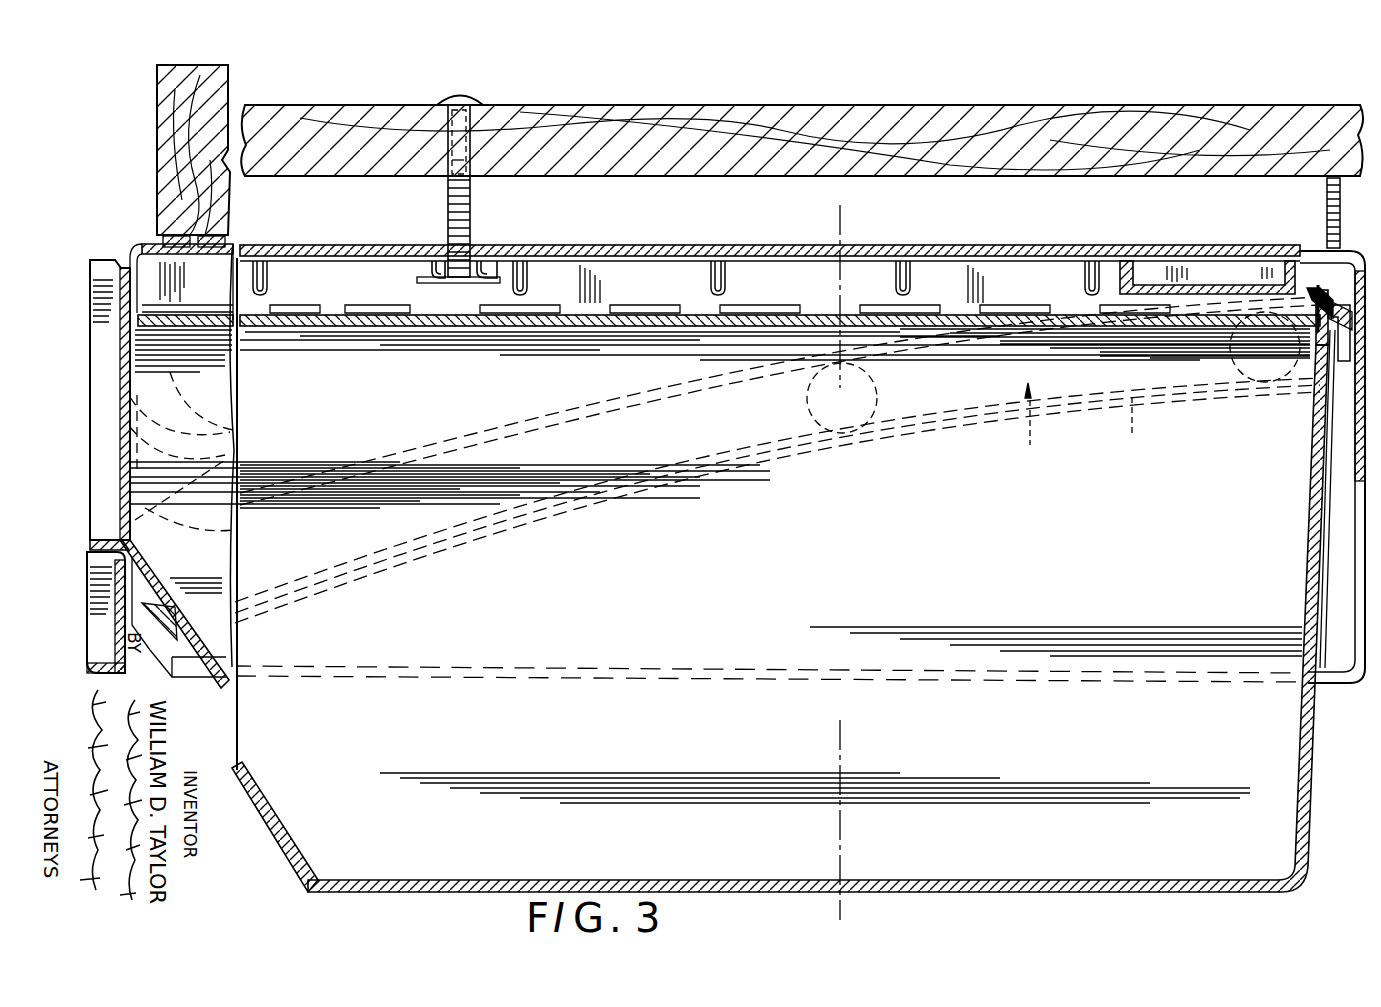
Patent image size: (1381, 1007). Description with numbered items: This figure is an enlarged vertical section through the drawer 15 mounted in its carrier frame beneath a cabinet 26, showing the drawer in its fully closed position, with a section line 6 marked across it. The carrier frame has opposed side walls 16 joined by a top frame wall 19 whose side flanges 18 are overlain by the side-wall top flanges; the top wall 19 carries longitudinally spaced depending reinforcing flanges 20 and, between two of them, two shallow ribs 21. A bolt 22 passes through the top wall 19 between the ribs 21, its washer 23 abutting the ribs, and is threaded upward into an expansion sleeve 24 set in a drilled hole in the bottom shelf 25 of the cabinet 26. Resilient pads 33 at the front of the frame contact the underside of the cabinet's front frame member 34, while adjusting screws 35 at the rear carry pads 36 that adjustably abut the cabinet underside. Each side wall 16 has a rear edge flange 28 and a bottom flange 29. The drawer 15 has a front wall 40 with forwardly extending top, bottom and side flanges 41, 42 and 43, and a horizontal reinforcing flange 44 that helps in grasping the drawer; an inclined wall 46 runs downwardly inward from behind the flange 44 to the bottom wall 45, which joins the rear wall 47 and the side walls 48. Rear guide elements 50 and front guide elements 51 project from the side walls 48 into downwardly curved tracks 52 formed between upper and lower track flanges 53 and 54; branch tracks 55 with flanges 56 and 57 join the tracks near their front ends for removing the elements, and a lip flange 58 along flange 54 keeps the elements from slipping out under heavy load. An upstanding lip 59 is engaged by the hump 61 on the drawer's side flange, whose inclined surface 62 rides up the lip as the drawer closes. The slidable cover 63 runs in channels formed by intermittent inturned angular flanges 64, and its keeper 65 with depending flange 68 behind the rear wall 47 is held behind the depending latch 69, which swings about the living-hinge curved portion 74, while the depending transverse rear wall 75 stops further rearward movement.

The section line 6 is at (895, 211).
The drawer 15 is at (262, 852).
The side walls 16 is at (1338, 662).
The side flanges 18 is at (628, 262).
The top frame wall 19 is at (668, 256).
The reinforcing flanges 20 is at (268, 282).
The shallow ribs 21 is at (436, 268).
The bolt 22 is at (470, 206).
The washer 23 is at (492, 283).
The expansion sleeve 24 is at (455, 160).
The bottom shelf 25 is at (693, 112).
The cabinet 26 is at (150, 152).
The rear edge flanges 28 is at (1326, 532).
The bottom flanges 29 is at (730, 668).
The resilient pads 33 is at (200, 240).
The front frame member 34 is at (156, 95).
The adjusting screws 35 is at (1326, 212).
The pads 36 is at (1330, 180).
The front wall 40 is at (132, 408).
The top flange 41 is at (132, 258).
The bottom flange 42 is at (98, 655).
The side flanges 43 is at (100, 410).
The horizontal reinforcing flange 44 is at (105, 548).
The bottom wall 45 is at (452, 880).
The inclined wall 46 is at (155, 583).
The rear wall 47 is at (1300, 742).
The side walls 48 is at (724, 560).
The rear guide elements 50 is at (1255, 385).
The front guide elements 51 is at (870, 428).
The tracks 52 is at (1039, 428).
The upper track flange 53 is at (644, 398).
The lower track flange 54 is at (1131, 427).
The branch tracks 55 is at (150, 465).
The upper track flange of branch track 56 is at (238, 402).
The lower track flange of branch track 57 is at (238, 529).
The lip flange 58 is at (696, 460).
The upstanding lip 59 is at (150, 500).
The hump 61 is at (168, 480).
The inclined surface 62 is at (175, 490).
The slidable cover 63 is at (430, 327).
The intermittent inturned angular flanges 64 is at (344, 308).
The keeper 65 is at (1318, 345).
The depending flange 68 is at (1336, 330).
The latch 69 is at (1310, 282).
The curved portion 74 is at (1140, 285).
The transverse rear wall 75 is at (1322, 350).